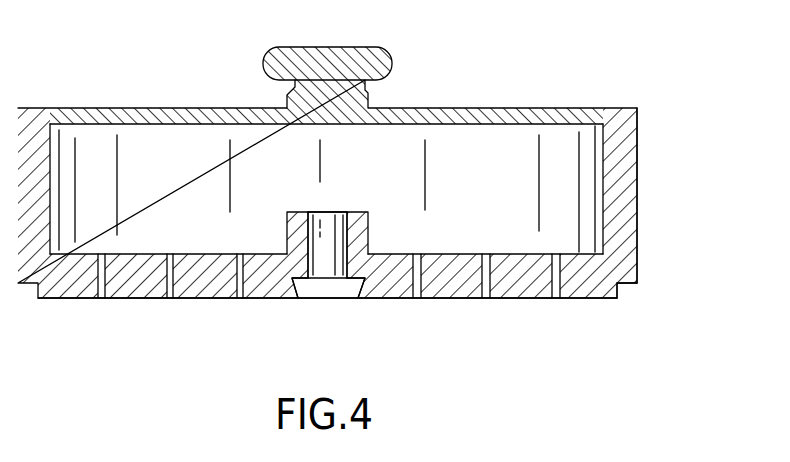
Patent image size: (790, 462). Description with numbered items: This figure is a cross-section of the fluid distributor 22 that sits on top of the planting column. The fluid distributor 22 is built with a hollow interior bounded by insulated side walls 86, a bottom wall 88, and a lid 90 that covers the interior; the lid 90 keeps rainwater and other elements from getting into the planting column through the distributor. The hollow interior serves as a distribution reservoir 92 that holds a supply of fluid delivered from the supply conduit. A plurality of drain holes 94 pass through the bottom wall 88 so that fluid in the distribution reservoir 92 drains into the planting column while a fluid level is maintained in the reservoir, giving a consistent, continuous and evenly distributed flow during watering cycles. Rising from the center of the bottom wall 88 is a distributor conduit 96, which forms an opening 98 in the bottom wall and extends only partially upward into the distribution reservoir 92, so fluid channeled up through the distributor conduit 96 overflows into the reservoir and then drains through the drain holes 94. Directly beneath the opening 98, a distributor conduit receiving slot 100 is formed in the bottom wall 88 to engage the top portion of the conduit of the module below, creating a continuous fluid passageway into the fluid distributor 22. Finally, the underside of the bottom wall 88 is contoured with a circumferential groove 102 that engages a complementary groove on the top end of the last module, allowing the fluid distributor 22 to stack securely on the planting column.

The fluid distributor 22 is at (637, 107).
The lid 90 is at (468, 107).
The insulated side walls 86 is at (637, 187).
The bottom wall 88 is at (583, 299).
The circumferential groove 102 is at (617, 285).
The distribution reservoir 92 is at (93, 178).
The drain holes 94 is at (102, 298).
The distributor conduit 96 is at (368, 229).
The opening 98 is at (347, 299).
The distributor conduit receiving slot 100 is at (298, 298).